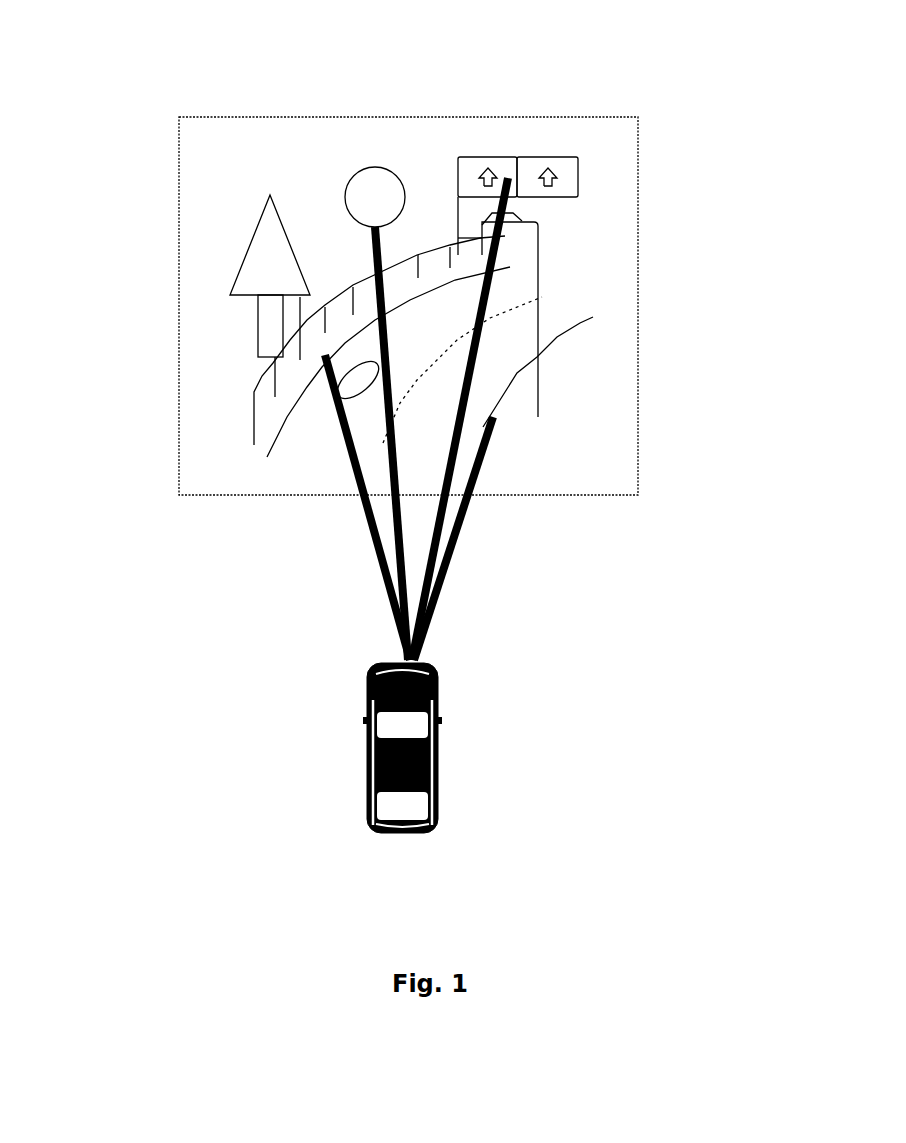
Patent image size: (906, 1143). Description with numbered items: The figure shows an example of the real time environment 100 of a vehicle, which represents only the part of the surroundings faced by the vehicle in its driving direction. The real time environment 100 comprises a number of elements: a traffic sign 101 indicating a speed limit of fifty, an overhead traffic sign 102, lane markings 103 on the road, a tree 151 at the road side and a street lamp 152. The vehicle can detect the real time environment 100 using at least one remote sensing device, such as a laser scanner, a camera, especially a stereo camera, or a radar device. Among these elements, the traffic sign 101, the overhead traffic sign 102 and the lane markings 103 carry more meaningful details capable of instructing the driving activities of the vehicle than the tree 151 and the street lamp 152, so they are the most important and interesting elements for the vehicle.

The real time environment 100 is at (553, 117).
The traffic sign 101 is at (357, 167).
The overhead traffic sign 102 is at (467, 152).
The lane markings 103 is at (515, 362).
The tree 151 is at (260, 276).
The street lamp 152 is at (537, 273).